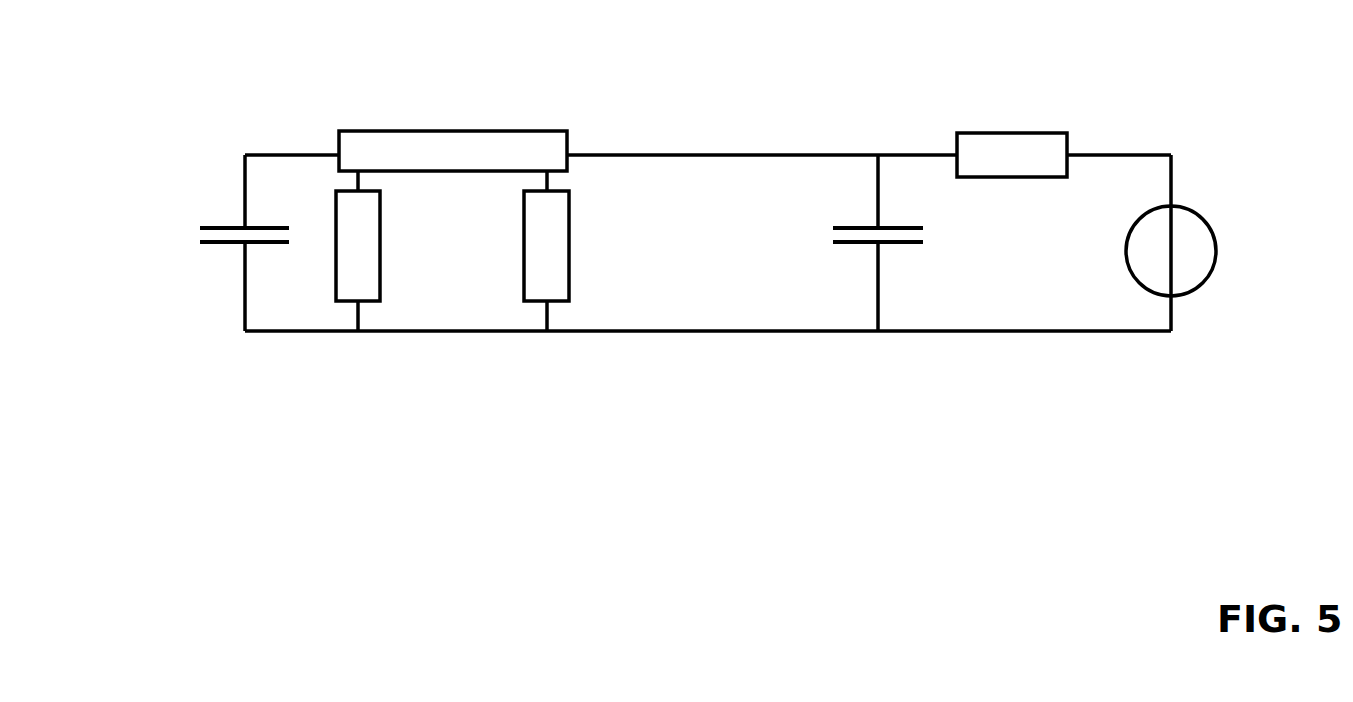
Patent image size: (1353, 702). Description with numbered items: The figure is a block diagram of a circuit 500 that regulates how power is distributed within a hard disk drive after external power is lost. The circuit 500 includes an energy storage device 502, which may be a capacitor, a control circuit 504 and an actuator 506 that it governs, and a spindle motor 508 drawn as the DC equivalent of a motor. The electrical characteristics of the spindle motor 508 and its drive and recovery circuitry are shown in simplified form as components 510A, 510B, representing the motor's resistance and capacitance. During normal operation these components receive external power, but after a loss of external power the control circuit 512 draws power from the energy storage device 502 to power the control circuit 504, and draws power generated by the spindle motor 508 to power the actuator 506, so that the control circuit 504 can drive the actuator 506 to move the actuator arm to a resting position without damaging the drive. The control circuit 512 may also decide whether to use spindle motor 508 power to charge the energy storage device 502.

The circuit 500 is at (1148, 64).
The energy storage device 502 is at (122, 207).
The control circuit 504 is at (411, 232).
The actuator 506 is at (606, 237).
The spindle motor 508 is at (1249, 214).
The motor resistance component 510A is at (770, 259).
The motor capacitance component 510B is at (985, 91).
The control circuit 512 is at (432, 72).